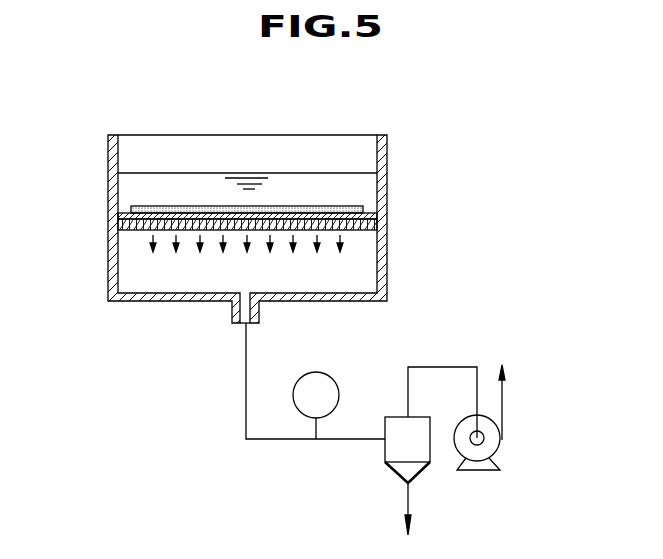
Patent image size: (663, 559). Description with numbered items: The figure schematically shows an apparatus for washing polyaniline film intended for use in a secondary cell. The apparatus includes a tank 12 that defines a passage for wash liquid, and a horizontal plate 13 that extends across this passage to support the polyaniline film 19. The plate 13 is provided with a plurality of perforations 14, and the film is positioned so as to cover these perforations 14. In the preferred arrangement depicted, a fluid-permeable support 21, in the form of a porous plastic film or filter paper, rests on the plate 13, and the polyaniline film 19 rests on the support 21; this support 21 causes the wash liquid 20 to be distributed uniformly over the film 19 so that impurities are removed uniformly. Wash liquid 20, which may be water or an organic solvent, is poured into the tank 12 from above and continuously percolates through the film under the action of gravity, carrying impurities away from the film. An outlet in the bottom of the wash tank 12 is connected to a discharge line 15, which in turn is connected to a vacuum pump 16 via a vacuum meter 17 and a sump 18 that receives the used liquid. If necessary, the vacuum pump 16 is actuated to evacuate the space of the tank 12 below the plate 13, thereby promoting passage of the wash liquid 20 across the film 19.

The tank 12 is at (112, 193).
The horizontal plate 13 is at (363, 230).
The perforations 14 is at (153, 231).
The discharge line 15 is at (245, 362).
The vacuum pump 16 is at (501, 444).
The vacuum meter 17 is at (327, 372).
The sump 18 is at (385, 464).
The polyaniline film 19 is at (335, 206).
The wash liquid 20 is at (162, 187).
The fluid-permeable support 21 is at (277, 212).